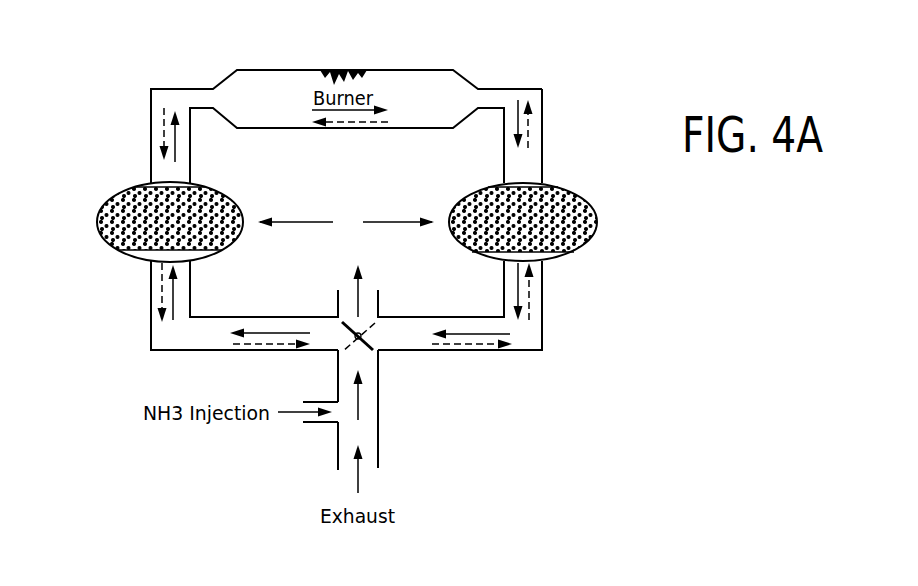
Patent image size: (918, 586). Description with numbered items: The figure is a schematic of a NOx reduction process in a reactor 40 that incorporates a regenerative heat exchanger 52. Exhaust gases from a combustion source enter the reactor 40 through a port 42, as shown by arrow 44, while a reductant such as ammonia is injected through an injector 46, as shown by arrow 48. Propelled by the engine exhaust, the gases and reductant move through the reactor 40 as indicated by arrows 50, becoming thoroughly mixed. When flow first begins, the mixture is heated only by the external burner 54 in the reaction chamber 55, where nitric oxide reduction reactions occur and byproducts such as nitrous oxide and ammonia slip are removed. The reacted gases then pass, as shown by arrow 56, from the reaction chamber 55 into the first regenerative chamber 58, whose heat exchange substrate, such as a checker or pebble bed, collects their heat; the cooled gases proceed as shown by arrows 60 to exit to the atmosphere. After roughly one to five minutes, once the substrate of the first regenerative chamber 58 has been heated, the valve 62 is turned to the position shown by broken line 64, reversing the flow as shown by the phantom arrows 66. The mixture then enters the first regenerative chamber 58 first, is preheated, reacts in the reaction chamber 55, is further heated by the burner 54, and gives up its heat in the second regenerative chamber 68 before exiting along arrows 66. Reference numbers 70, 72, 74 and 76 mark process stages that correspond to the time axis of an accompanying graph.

The reactor 40 is at (547, 70).
The port 42 is at (370, 462).
The arrow 44 is at (357, 478).
The injector 46 is at (317, 423).
The arrow 48 is at (303, 401).
The arrows 50 is at (268, 338).
The regenerative heat exchanger 52 is at (346, 222).
The external burner 54 is at (340, 68).
The reaction chamber 55 is at (385, 64).
The arrow 56 is at (512, 118).
The first regenerative chamber 58 is at (598, 222).
The arrows 60 is at (473, 330).
The valve 62 is at (364, 338).
The broken line 64 is at (352, 345).
The arrows 66 is at (162, 127).
The second regenerative chamber 68 is at (97, 220).
The reference number 70 is at (398, 347).
The reference number 72 is at (509, 176).
The reference number 74 is at (260, 112).
The reference number 76 is at (187, 347).